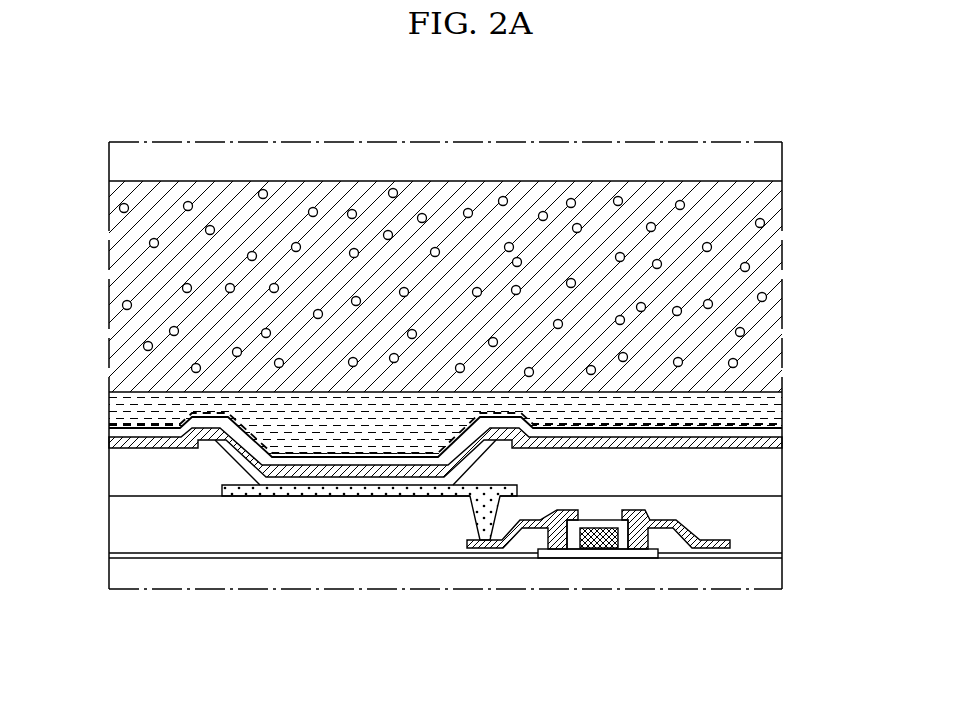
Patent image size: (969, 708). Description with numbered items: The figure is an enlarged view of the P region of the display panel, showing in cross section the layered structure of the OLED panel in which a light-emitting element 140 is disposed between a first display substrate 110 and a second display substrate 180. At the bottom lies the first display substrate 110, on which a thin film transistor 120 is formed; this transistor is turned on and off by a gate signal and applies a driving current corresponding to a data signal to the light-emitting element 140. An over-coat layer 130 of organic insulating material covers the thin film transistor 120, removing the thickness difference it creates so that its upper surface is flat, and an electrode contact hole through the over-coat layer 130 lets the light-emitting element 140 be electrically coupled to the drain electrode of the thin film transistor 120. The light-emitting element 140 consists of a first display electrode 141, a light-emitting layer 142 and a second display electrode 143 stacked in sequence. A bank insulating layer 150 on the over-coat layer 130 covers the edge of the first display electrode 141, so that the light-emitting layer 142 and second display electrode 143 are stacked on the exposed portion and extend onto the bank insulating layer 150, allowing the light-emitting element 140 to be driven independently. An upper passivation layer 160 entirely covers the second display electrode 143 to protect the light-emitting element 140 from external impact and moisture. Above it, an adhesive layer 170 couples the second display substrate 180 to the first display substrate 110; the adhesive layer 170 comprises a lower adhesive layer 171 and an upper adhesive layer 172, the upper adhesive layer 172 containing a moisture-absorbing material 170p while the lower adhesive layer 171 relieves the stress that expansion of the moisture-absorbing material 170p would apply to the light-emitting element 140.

The P region P is at (117, 140).
The first display substrate 110 is at (770, 578).
The thin film transistor 120 is at (588, 558).
The over-coat layer 130 is at (770, 522).
The light-emitting element 140 is at (445, 568).
The first display electrode 141 is at (353, 489).
The light-emitting layer 142 is at (315, 481).
The second display electrode 143 is at (245, 455).
The bank insulating layer 150 is at (770, 467).
The upper passivation layer 160 is at (112, 433).
The adhesive layer 170 is at (471, 321).
The moisture-absorbing material 170p is at (166, 324).
The lower adhesive layer 171 is at (477, 427).
The upper adhesive layer 172 is at (782, 315).
The second display substrate 180 is at (772, 158).